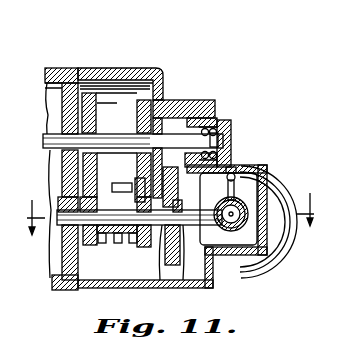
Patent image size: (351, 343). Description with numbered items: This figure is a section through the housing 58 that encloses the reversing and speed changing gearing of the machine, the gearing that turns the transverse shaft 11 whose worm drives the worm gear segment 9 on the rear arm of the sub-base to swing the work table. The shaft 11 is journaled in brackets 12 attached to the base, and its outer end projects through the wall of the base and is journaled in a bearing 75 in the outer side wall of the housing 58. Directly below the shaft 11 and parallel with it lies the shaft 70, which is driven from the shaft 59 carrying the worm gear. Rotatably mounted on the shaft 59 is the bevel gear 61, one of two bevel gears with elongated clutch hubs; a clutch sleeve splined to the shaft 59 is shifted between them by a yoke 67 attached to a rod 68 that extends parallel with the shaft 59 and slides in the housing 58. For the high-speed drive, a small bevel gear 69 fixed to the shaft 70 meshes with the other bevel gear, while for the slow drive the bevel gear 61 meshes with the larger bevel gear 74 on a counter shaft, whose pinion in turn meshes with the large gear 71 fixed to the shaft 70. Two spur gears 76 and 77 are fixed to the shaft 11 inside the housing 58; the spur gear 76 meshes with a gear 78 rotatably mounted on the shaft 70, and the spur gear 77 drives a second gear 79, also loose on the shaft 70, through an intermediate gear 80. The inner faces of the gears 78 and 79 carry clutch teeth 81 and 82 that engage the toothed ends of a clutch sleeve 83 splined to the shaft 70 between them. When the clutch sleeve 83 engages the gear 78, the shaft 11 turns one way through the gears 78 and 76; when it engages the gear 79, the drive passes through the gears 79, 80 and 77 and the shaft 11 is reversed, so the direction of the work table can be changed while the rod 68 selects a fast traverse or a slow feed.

The housing 58 is at (165, 68).
The spur gear 76 is at (109, 68).
The spur gear 77 is at (161, 72).
The transverse shaft 11 is at (182, 117).
The bearing 75 is at (222, 112).
The intermediate gear 80 is at (133, 151).
The clutch teeth 82 is at (120, 136).
The clutch sleeve 83 is at (120, 186).
The clutch teeth 81 is at (83, 203).
The second gear 79 is at (140, 243).
The large gear 71 is at (197, 278).
The shaft 70 is at (158, 245).
The gear 78 is at (90, 289).
The small bevel gear 69 is at (228, 262).
The bevel gear 61 is at (245, 206).
The yoke 67 is at (238, 182).
The rod 68 is at (236, 170).
The shaft 59 is at (272, 243).
The brackets 12 is at (183, 206).
The bevel gear 74 is at (334, 329).
The worm gear segment 9 is at (345, 269).